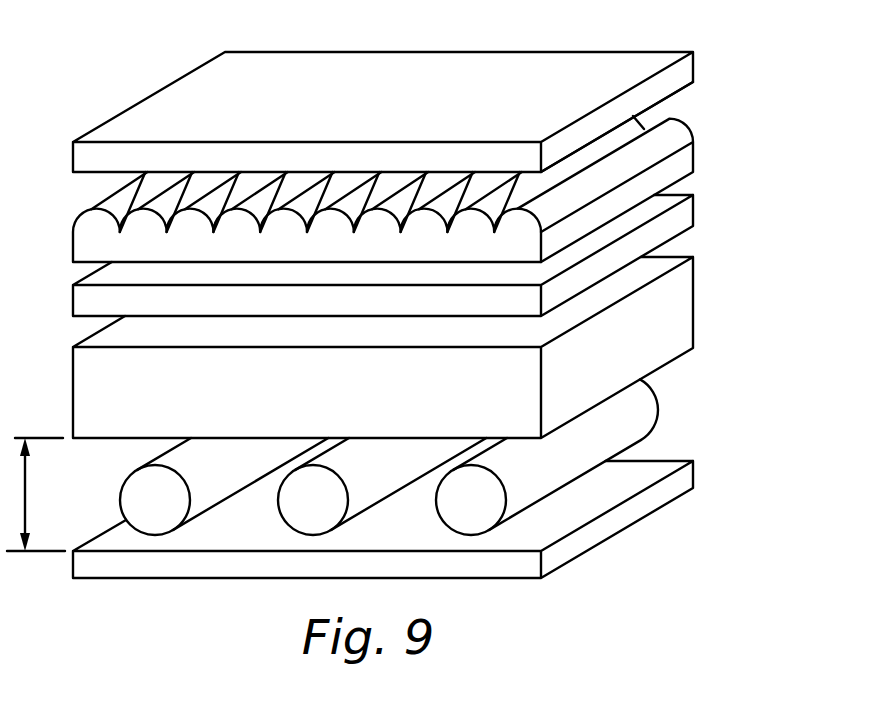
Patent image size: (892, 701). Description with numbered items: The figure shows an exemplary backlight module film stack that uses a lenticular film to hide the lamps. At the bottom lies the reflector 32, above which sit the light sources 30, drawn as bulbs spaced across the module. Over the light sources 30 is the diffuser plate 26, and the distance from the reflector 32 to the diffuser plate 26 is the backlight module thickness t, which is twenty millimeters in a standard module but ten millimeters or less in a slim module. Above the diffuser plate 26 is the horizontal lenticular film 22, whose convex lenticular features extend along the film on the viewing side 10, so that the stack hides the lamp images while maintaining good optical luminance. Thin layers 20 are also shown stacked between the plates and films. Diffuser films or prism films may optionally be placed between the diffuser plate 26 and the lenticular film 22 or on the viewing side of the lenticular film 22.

The viewing side 10 is at (453, 75).
The adhesive layer / thin plate 20 is at (691, 90).
The horizontal lenticular film 22 is at (711, 160).
The diffuser plate 26 is at (711, 325).
The light sources 30 is at (663, 432).
The reflector 32 is at (631, 530).
The backlight module thickness t is at (36, 494).